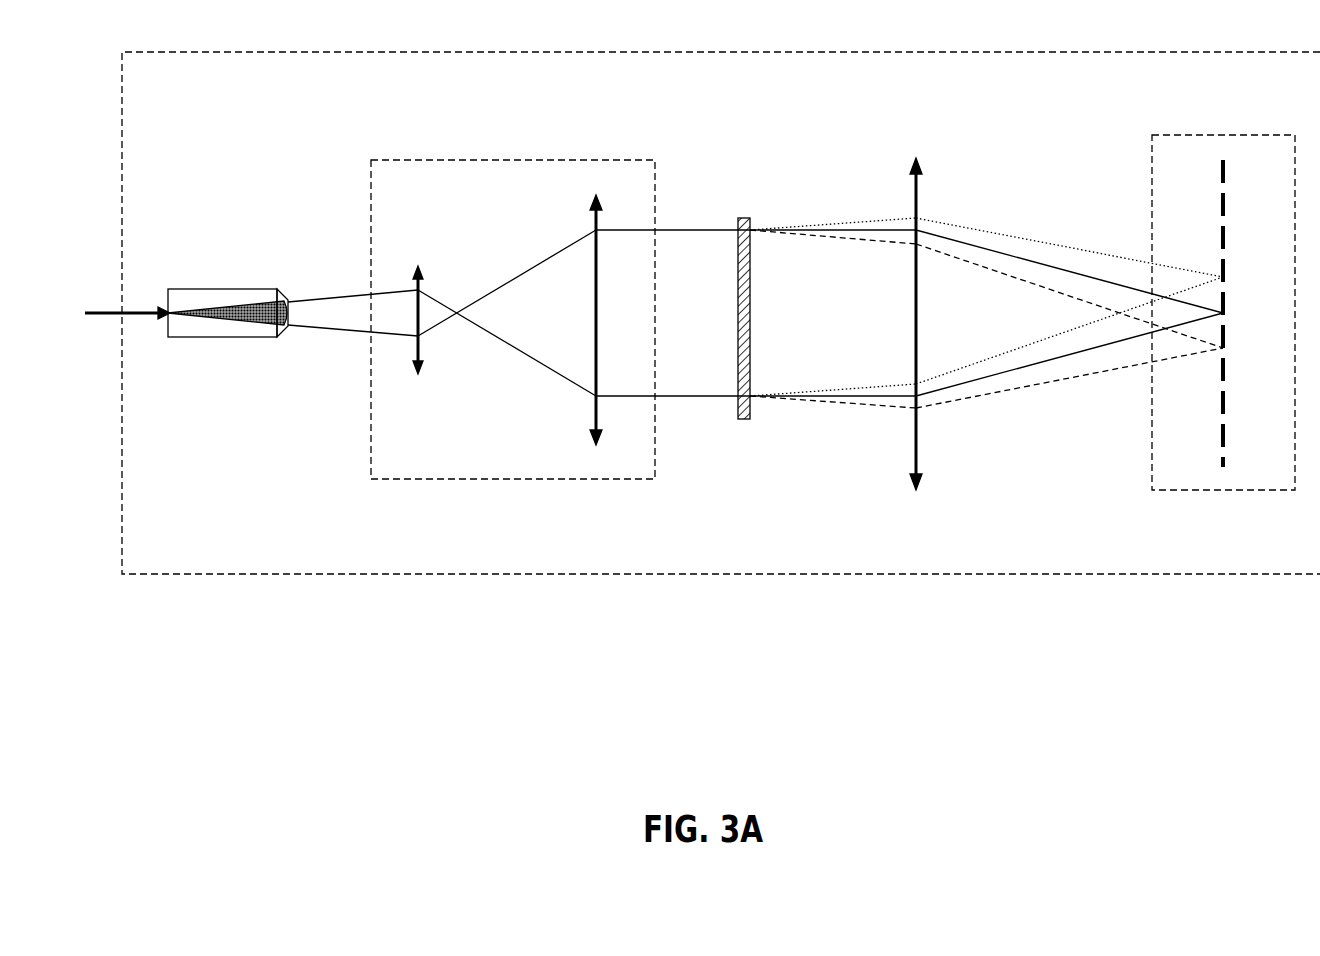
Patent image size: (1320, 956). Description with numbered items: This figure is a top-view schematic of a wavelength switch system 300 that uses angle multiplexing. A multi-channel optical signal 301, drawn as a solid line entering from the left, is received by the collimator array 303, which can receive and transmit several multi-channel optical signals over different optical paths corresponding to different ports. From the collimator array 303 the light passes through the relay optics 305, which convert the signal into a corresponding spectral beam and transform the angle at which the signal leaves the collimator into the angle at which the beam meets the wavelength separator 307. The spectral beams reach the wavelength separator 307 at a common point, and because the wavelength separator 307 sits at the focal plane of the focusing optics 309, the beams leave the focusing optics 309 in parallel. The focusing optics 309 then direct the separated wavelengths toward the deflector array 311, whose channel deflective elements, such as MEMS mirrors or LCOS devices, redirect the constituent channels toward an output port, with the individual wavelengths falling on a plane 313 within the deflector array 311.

The wavelength switch system 300 is at (196, 575).
The first multi-channel optical signal 301 is at (98, 310).
The collimator array 303 is at (229, 291).
The relay optics 305 is at (491, 480).
The wavelength separator 307 is at (742, 421).
The focusing optics 309 is at (918, 491).
The deflector array 311 is at (1227, 491).
The detector plane 313 is at (1227, 421).